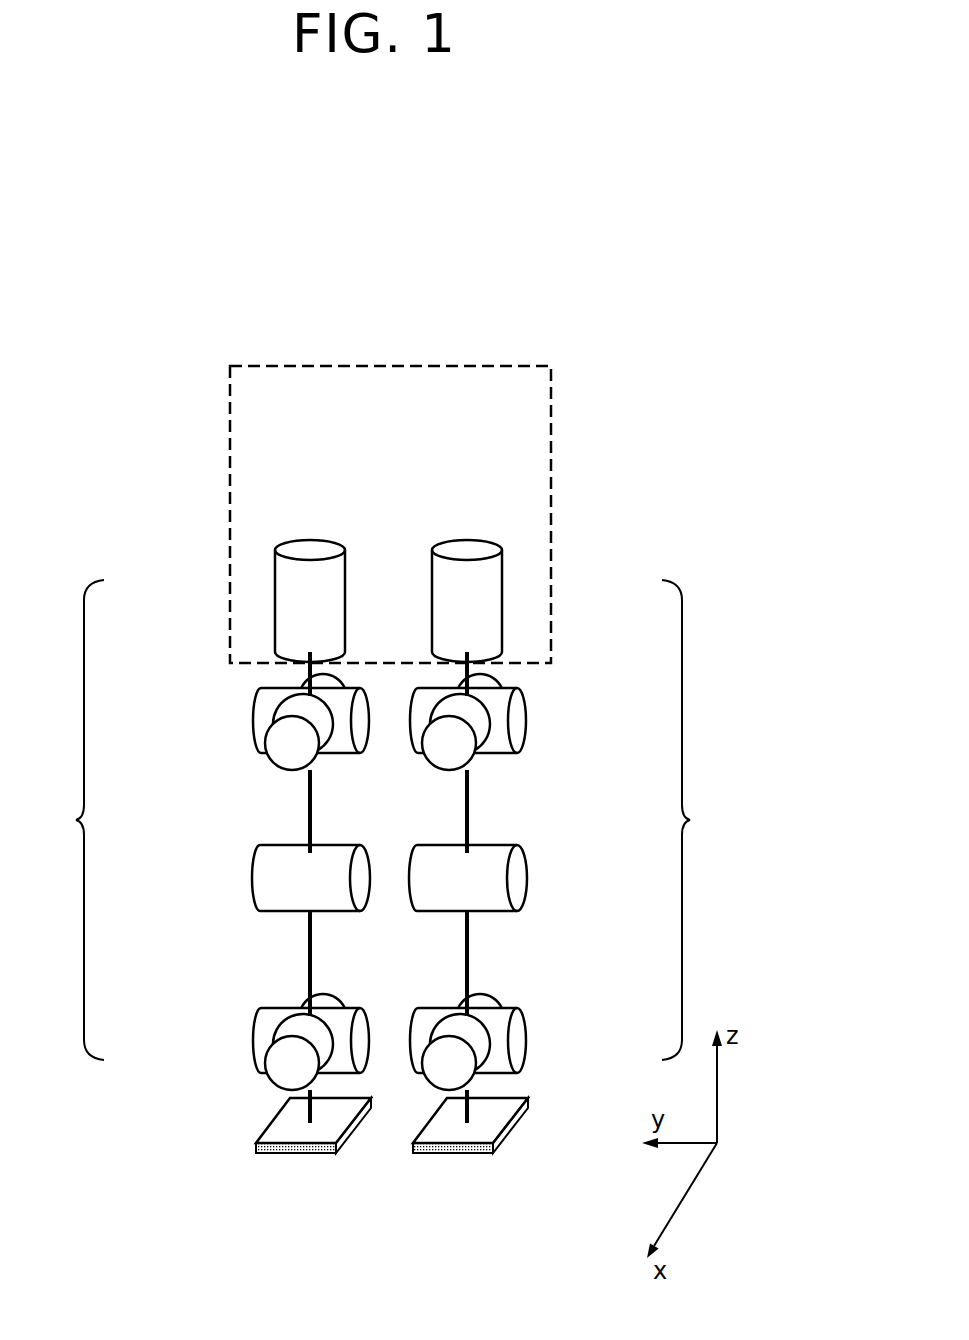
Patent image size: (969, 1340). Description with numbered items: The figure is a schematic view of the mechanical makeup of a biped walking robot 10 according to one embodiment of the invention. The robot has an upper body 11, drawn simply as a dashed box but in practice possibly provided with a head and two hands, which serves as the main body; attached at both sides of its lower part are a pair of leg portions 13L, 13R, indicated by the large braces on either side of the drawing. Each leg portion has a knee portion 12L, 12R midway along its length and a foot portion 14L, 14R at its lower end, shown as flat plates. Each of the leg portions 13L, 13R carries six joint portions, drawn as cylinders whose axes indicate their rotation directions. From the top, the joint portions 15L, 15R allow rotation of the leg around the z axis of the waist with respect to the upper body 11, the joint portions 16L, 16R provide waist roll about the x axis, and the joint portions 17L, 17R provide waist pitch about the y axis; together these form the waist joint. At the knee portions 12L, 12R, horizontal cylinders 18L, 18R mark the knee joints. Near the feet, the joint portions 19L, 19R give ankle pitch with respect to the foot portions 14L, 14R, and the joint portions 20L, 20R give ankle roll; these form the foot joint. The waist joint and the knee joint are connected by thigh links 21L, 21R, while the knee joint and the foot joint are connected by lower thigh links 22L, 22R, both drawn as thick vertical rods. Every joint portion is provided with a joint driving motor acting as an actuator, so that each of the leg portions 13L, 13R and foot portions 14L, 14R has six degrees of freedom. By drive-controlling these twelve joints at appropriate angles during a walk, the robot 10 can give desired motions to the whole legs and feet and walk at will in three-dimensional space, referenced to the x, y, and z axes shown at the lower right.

The biped walking robot 10 is at (609, 330).
The upper body 11 is at (553, 425).
The knee portion 12R is at (247, 847).
The knee portion 12L is at (530, 840).
The leg portion 13R is at (63, 820).
The leg portion 13L is at (704, 820).
The foot portion 14R is at (270, 1140).
The foot portion 14L is at (517, 1120).
The joint portion 15R is at (290, 614).
The joint portion 15L is at (483, 605).
The joint portion 16R is at (287, 763).
The joint portion 16L is at (463, 748).
The joint portion 17R is at (257, 707).
The joint portion 17L is at (515, 717).
The right knee pitch axis actuator 18R is at (252, 878).
The left knee pitch axis actuator 18L is at (518, 873).
The joint portion 19R is at (257, 1030).
The joint portion 19L is at (515, 1047).
The joint portion 20R is at (290, 1078).
The joint portion 20L is at (463, 1068).
The thigh link 21R is at (308, 803).
The thigh link 21L is at (463, 812).
The lower thigh link 22R is at (312, 960).
The lower thigh link 22L is at (473, 960).